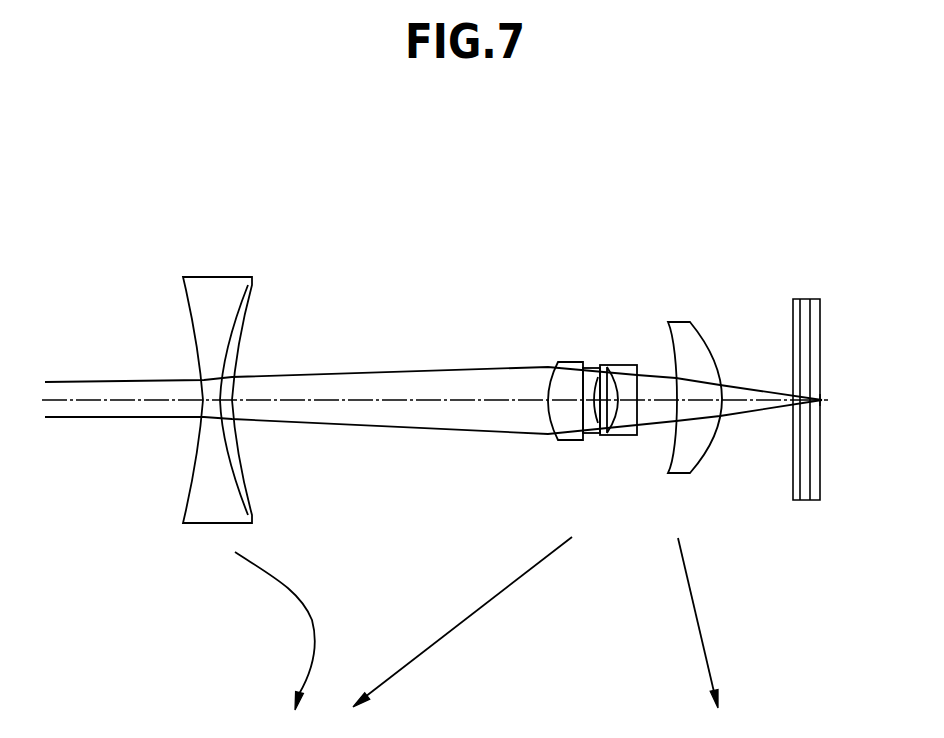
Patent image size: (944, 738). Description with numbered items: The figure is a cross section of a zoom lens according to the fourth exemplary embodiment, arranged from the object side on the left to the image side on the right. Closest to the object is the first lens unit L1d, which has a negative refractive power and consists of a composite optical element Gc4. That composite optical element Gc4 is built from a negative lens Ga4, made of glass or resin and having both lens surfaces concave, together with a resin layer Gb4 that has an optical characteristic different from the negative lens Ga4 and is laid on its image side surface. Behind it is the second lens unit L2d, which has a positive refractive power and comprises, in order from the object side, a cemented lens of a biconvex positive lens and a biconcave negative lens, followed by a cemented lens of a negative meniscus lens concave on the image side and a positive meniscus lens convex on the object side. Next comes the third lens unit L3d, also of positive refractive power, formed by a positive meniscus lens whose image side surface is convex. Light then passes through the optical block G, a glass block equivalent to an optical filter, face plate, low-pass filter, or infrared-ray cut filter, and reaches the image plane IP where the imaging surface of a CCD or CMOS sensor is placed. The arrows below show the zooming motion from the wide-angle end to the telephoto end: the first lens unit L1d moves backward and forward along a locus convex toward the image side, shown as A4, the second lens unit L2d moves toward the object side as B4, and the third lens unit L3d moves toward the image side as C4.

The first lens unit L1d is at (273, 275).
The composite optical element Gc4 is at (263, 283).
The negative lens Ga4 is at (200, 513).
The resin layer Gb4 is at (235, 437).
The second lens unit L2d is at (642, 335).
The third lens unit L3d is at (717, 318).
The optical block G is at (832, 310).
The image plane IP is at (835, 466).
The locus of first lens unit A4 is at (284, 631).
The movement of second lens unit B4 is at (462, 622).
The movement of third lens unit C4 is at (705, 623).